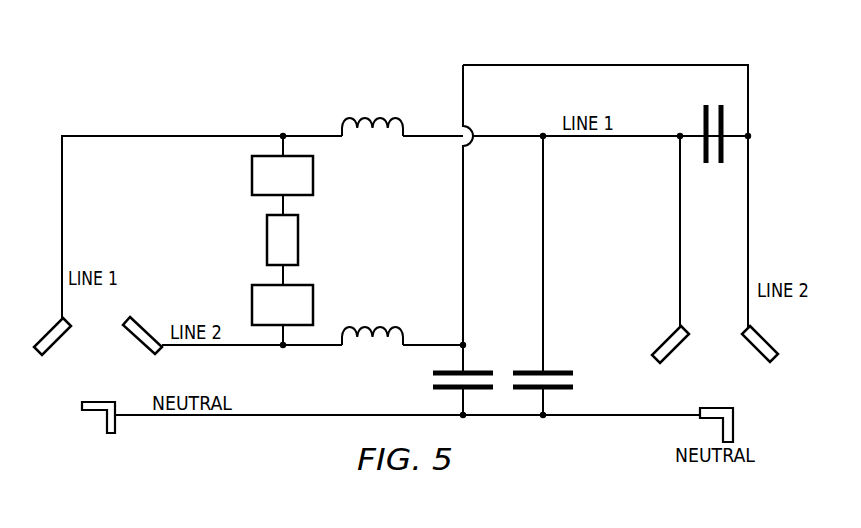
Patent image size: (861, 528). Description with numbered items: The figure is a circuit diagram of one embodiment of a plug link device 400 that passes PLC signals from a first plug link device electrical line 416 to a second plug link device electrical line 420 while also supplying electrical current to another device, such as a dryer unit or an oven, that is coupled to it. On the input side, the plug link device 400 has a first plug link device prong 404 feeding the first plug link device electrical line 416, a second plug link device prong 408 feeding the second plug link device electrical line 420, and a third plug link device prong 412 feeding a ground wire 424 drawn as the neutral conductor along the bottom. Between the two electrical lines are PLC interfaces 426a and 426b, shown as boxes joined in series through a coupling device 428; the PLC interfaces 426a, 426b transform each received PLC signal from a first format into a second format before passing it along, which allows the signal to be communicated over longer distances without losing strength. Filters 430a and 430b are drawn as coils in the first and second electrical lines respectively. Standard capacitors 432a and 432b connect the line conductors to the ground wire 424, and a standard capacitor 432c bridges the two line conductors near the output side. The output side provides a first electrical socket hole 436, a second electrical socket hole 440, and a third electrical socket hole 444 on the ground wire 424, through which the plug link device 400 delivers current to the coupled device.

The plug link device 400 is at (232, 83).
The first plug link device prong 404 is at (47, 333).
The second plug link device prong 408 is at (137, 339).
The third plug link device prong 412 is at (91, 418).
The first plug link device electrical line 416 is at (158, 135).
The second plug link device electrical line 420 is at (262, 349).
The ground wire 424 is at (182, 417).
The PLC interface 426a is at (252, 173).
The PLC interface 426b is at (252, 303).
The coupling device 428 is at (267, 240).
The filter 430a is at (365, 118).
The filter 430b is at (380, 328).
The standard capacitor 432a is at (480, 370).
The standard capacitor 432b is at (560, 370).
The standard capacitor 432c is at (704, 122).
The first electrical socket hole 436 is at (667, 340).
The second electrical socket hole 440 is at (757, 349).
The third electrical socket hole 444 is at (734, 421).